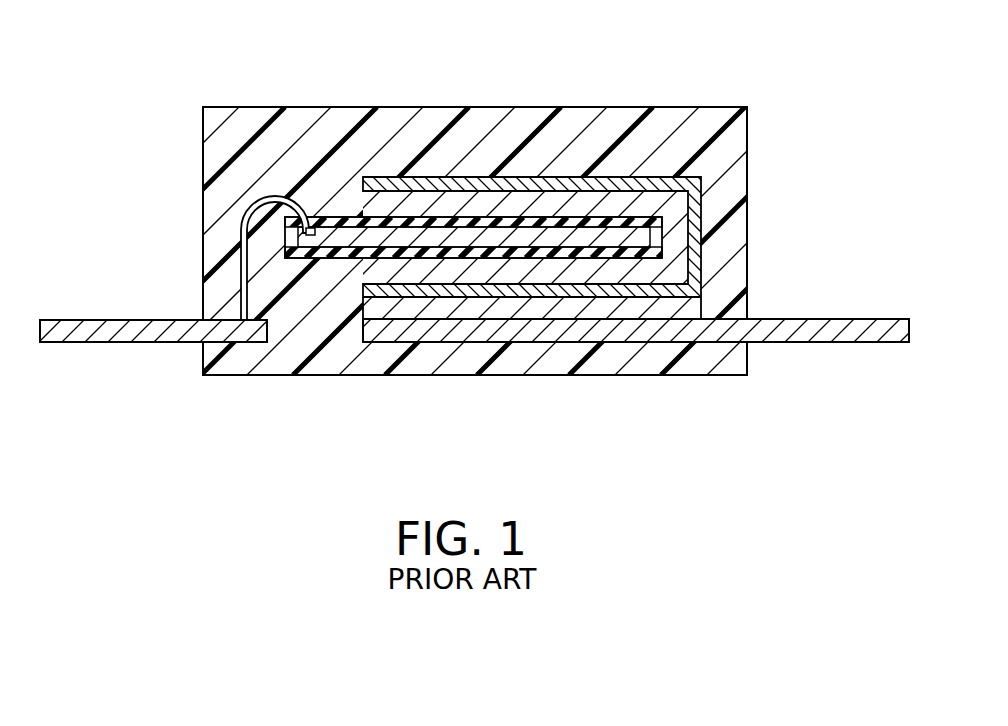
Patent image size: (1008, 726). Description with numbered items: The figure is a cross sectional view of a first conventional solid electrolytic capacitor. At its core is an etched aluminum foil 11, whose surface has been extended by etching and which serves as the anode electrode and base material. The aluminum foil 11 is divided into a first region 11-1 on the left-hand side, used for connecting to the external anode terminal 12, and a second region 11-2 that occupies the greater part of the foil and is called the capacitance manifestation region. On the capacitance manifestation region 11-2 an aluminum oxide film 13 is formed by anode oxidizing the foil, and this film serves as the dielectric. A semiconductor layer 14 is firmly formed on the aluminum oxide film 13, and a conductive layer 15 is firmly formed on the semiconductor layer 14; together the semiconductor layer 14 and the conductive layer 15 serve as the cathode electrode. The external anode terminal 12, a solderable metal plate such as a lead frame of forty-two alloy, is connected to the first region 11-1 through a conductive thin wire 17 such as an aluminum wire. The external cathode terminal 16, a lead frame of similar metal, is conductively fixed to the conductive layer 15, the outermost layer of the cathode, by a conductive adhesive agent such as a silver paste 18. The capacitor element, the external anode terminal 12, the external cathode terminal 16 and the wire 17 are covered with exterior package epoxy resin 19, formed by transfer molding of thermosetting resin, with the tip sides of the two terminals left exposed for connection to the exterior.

The aluminum foil 11 is at (469, 244).
The first region 11-1 is at (469, 244).
The second region 11-2 is at (505, 242).
The external anode terminal 12 is at (110, 332).
The aluminum oxide film 13 is at (628, 222).
The semiconductor layer 14 is at (562, 205).
The conductive layer 15 is at (430, 180).
The external cathode terminal 16 is at (828, 330).
The conductive thin wire 17 is at (289, 196).
The silver paste 18 is at (592, 308).
The exterior package epoxy resin 19 is at (345, 130).